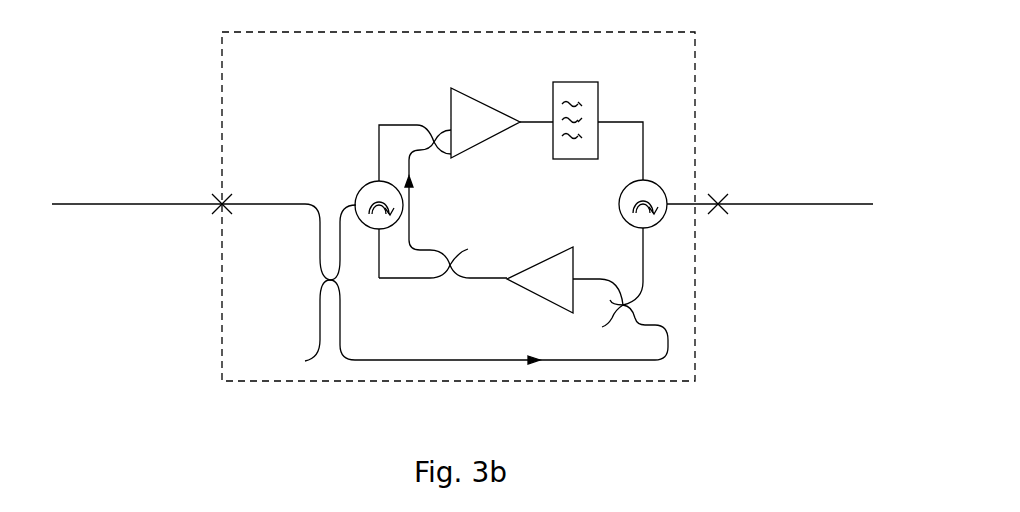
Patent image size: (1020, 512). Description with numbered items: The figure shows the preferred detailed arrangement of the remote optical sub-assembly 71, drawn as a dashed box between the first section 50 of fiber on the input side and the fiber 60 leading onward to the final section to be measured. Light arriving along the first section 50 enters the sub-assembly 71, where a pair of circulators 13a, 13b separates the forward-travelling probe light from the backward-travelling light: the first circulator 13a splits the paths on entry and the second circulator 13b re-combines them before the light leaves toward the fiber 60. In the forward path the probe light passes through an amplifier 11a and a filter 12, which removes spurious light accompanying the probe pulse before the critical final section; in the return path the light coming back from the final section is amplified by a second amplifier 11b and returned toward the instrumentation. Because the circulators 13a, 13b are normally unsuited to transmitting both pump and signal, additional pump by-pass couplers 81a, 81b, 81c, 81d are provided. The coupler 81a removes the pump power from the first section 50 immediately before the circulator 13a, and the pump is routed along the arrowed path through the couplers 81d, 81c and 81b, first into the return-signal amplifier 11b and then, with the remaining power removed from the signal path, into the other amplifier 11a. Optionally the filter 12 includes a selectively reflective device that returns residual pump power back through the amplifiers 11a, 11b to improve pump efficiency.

The sub-assembly 71 is at (318, 80).
The first section 50 is at (128, 203).
The output optical fiber 60 is at (790, 203).
The coupler 81a is at (333, 283).
The coupler 81b is at (434, 142).
The coupler 81c is at (468, 249).
The coupler 81d is at (623, 303).
The circulator 13a is at (360, 190).
The circulator 13b is at (652, 226).
The amplifier 11a is at (487, 100).
The amplifier 11b is at (530, 292).
The filter 12 is at (565, 82).